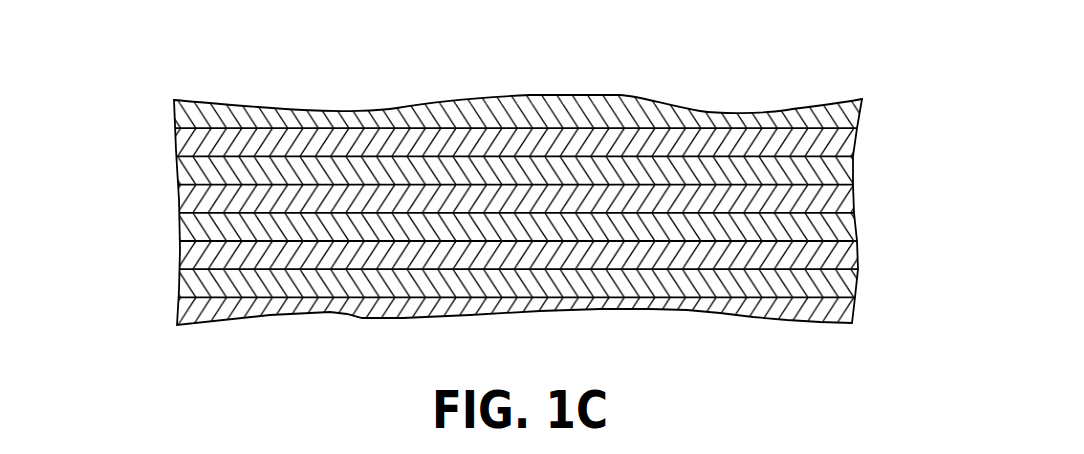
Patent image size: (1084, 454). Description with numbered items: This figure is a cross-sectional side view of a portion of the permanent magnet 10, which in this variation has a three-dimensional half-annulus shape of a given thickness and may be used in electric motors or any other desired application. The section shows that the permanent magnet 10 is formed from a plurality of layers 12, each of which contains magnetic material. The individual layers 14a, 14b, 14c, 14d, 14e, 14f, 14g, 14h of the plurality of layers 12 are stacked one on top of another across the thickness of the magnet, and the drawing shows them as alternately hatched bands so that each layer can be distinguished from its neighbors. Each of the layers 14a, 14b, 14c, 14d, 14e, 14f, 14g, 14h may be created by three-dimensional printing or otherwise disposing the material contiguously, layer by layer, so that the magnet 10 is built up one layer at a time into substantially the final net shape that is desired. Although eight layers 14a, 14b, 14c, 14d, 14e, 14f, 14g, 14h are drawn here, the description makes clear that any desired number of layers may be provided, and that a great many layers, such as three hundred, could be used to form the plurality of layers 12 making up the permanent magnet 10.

The permanent magnet 10 is at (769, 75).
The plurality of layers 12 is at (180, 252).
The layer 14a is at (185, 109).
The layer 14b is at (856, 147).
The layer 14c is at (186, 165).
The layer 14d is at (856, 203).
The layer 14e is at (186, 224).
The layer 14f is at (856, 258).
The layer 14g is at (186, 279).
The layer 14h is at (856, 313).